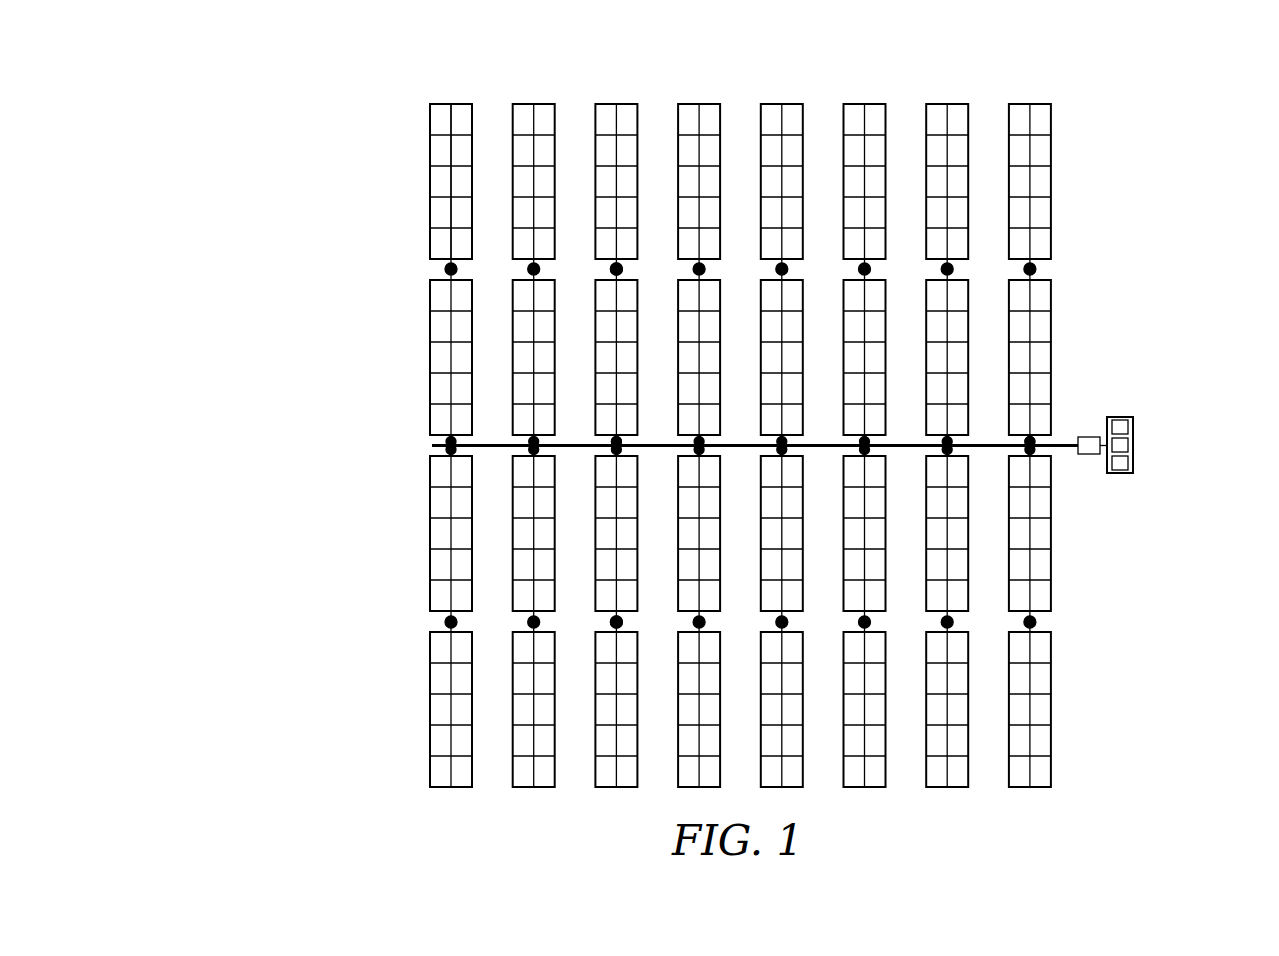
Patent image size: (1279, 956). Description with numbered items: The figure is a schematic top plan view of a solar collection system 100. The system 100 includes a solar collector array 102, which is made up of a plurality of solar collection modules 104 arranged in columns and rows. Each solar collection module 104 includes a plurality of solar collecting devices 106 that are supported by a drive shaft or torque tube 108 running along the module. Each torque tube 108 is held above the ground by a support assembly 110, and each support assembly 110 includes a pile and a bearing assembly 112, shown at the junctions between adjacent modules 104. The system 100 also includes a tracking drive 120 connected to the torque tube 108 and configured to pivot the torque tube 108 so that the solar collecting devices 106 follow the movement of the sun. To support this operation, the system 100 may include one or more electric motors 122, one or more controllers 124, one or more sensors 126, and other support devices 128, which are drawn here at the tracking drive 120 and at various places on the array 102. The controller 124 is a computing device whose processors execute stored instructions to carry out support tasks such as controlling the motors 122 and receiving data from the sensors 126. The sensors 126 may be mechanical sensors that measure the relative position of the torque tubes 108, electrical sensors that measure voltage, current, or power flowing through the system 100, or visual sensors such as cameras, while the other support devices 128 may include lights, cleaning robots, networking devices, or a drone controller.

The solar collection system 100 is at (252, 61).
The solar collector array 102 is at (305, 125).
The solar collection module 104 is at (426, 167).
The solar collecting device 106 is at (437, 104).
The torque tube 108 is at (459, 105).
The support assembly 110 is at (421, 263).
The bearing assembly 112 is at (448, 269).
The tracking drive 120 is at (1159, 463).
The electric motor 122 is at (619, 268).
The controller 124 is at (619, 621).
The sensor 126 is at (1120, 472).
The other support device 128 is at (619, 444).